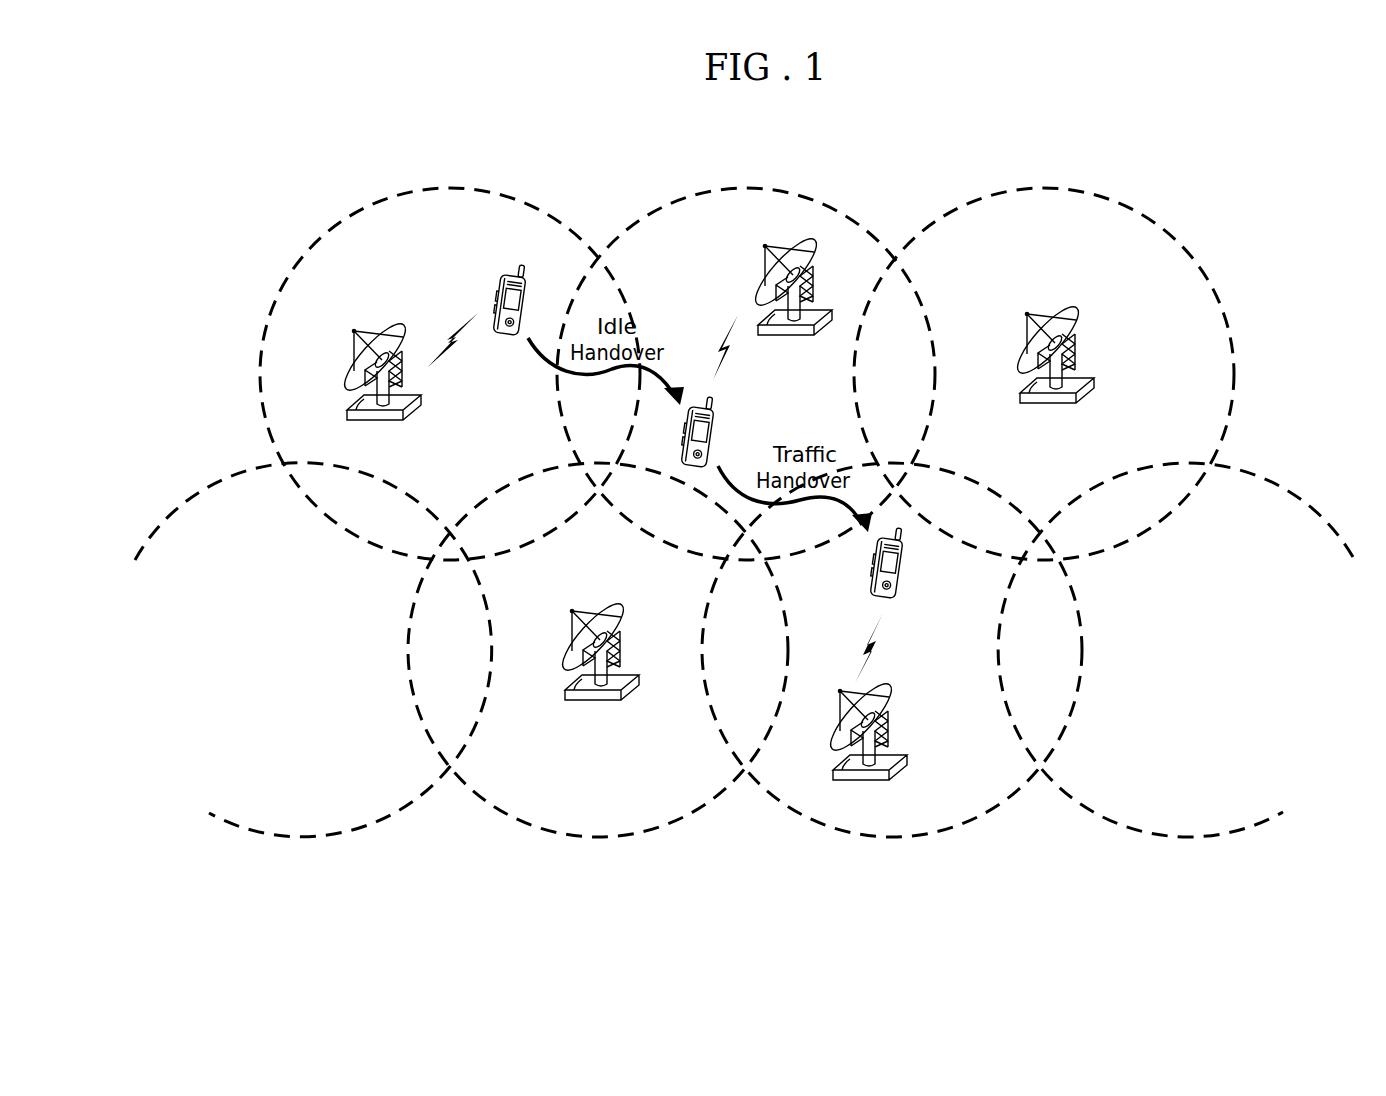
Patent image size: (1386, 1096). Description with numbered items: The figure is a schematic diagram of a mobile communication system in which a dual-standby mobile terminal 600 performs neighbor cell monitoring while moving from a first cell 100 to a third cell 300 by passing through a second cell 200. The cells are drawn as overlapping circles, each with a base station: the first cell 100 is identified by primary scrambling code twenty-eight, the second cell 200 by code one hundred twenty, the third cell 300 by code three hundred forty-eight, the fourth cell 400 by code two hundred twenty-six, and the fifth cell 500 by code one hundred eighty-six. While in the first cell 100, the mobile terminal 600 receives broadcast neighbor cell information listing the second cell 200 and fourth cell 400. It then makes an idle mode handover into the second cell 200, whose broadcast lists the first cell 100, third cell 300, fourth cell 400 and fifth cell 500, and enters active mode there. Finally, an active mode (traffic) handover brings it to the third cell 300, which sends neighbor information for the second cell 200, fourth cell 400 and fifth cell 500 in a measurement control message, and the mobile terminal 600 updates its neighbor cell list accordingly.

The first cell 100 is at (405, 326).
The second cell 200 is at (761, 268).
The third cell 300 is at (897, 693).
The fourth cell 400 is at (615, 608).
The fifth cell 500 is at (1021, 335).
The dual-standby mobile terminal 600 is at (506, 273).